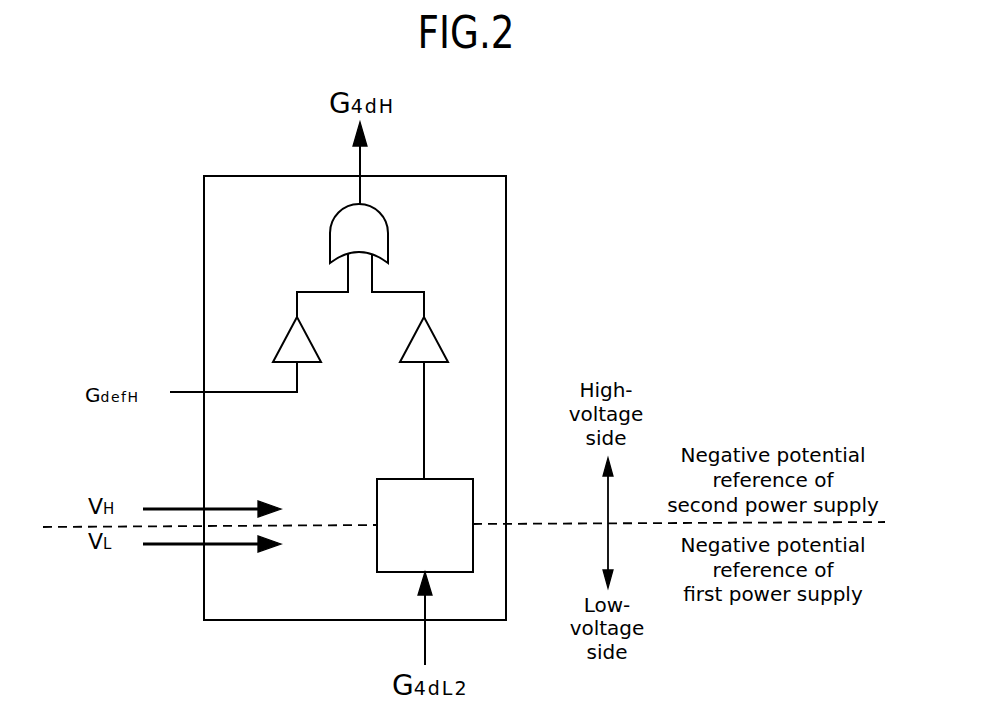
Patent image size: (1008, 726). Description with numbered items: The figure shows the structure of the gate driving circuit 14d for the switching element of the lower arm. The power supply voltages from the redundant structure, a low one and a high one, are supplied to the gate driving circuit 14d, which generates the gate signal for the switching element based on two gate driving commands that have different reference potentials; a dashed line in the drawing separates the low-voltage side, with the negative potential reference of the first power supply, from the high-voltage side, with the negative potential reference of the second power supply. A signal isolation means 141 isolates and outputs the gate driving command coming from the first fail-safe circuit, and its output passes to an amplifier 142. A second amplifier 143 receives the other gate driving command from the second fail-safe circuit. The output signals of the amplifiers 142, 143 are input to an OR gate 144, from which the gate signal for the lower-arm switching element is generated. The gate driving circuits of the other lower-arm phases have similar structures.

The gate driving circuit 14d is at (507, 209).
The signal isolation means 141 is at (405, 548).
The amplifier 142 is at (437, 357).
The amplifier 143 is at (305, 350).
The OR gate 144 is at (375, 230).